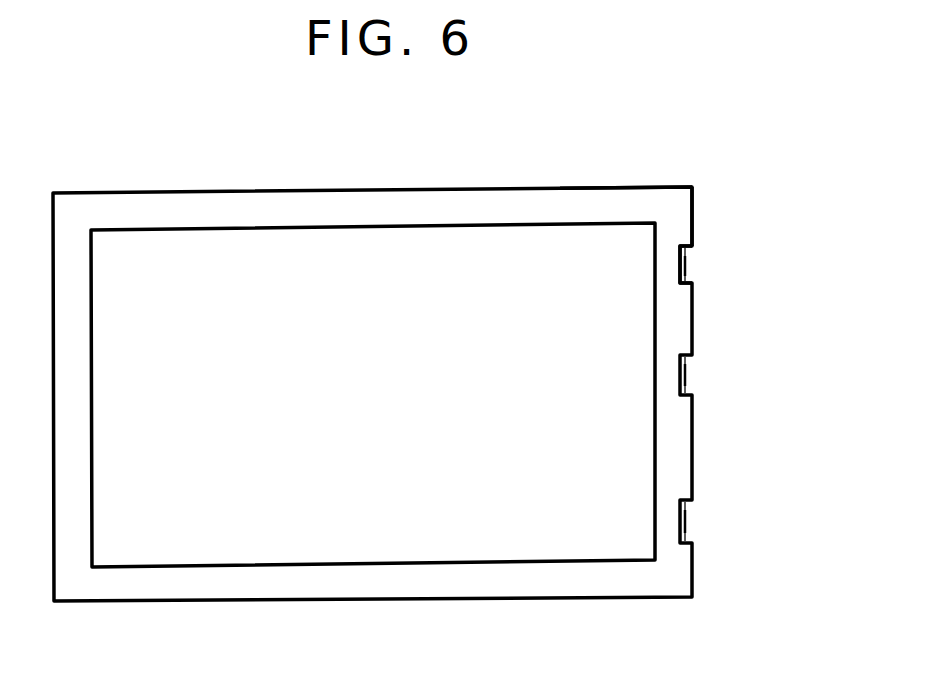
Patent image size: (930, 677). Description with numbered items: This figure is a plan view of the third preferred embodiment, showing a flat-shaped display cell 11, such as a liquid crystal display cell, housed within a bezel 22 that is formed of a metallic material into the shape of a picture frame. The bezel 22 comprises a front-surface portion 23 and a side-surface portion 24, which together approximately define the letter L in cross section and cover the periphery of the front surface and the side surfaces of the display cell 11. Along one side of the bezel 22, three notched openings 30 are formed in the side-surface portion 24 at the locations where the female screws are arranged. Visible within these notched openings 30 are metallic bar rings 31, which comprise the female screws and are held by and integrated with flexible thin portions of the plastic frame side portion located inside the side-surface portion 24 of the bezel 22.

The display cell 11 is at (382, 278).
The bezel 22 is at (533, 188).
The front-surface portion 23 is at (598, 200).
The side-surface portion 24 is at (692, 212).
The notched openings 30 is at (692, 250).
The metallic bar rings 31 is at (692, 275).